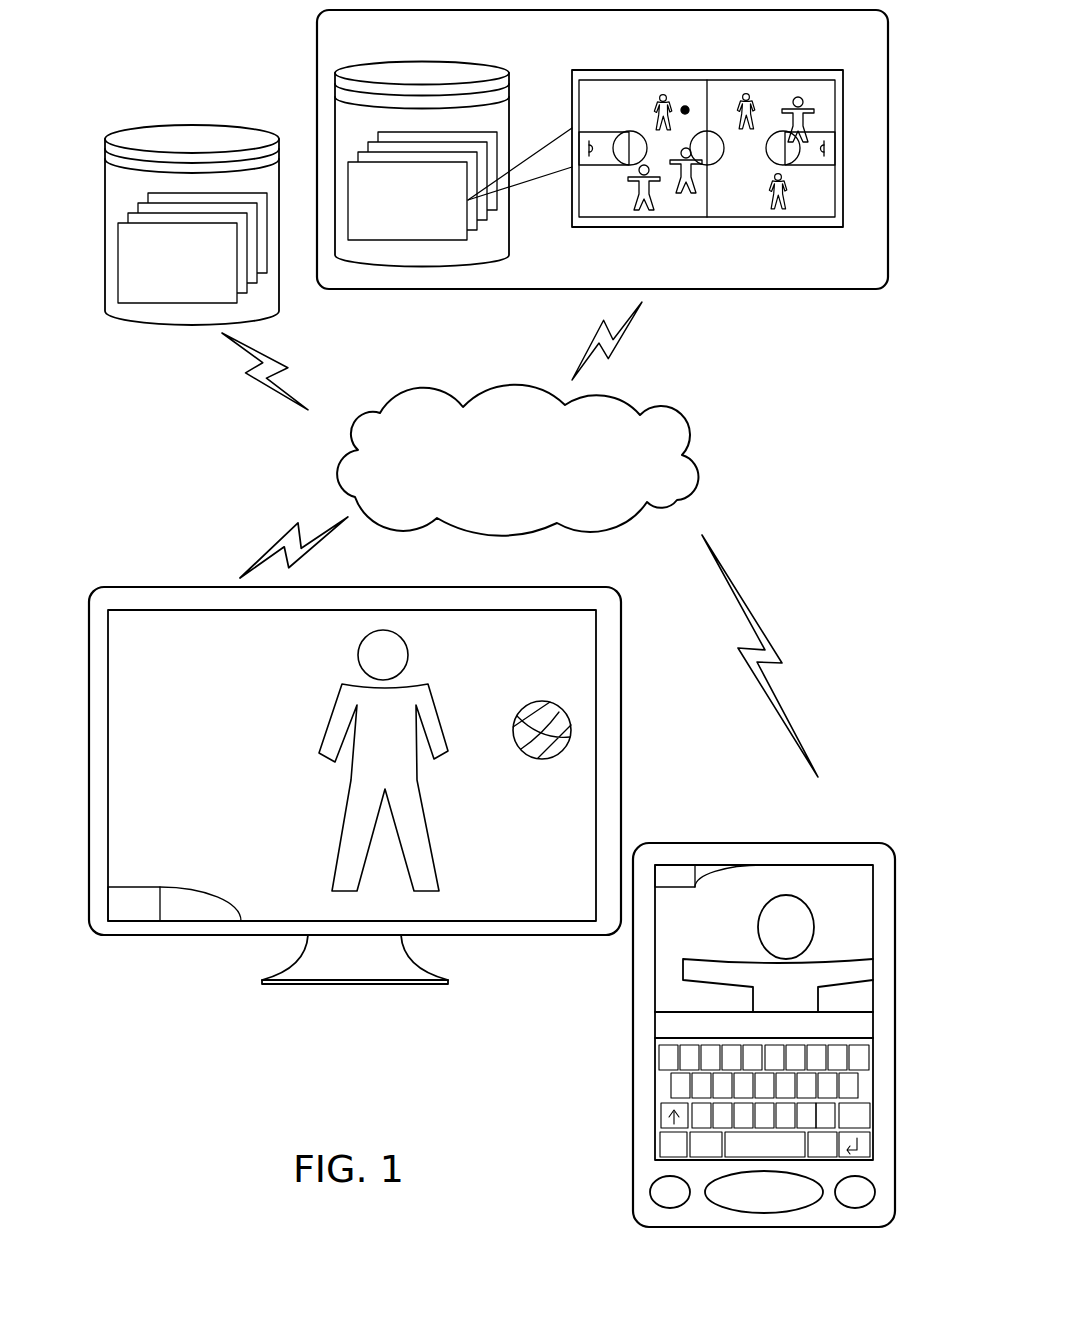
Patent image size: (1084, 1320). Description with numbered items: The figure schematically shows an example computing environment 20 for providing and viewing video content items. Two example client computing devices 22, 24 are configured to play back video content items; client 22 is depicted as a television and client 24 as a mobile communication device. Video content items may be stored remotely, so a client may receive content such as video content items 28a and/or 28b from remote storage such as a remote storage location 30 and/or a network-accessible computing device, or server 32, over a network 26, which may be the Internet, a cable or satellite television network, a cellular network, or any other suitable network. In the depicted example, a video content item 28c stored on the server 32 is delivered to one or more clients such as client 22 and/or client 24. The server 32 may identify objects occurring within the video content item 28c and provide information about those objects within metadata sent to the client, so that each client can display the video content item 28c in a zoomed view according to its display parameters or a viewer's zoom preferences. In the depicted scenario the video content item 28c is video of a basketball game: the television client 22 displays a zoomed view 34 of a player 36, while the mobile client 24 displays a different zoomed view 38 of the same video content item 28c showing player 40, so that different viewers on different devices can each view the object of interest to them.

The computing environment 20 is at (783, 388).
The client computing device 22 is at (494, 937).
The client computing device 24 is at (633, 1134).
The network 26 is at (581, 472).
The video content item 28a is at (258, 299).
The video content item 28b is at (490, 234).
The video content item 28c is at (378, 241).
The remote storage location 30 is at (120, 323).
The server 32 is at (725, 41).
The zoomed view 34 is at (540, 660).
The player 36 is at (655, 105).
The zoomed view 38 is at (784, 876).
The player 40 is at (638, 199).